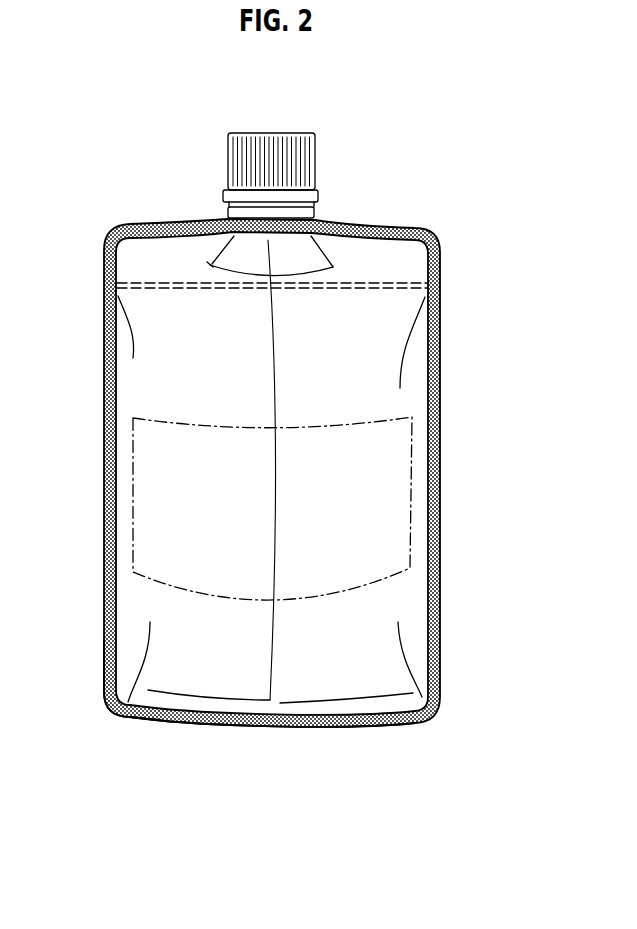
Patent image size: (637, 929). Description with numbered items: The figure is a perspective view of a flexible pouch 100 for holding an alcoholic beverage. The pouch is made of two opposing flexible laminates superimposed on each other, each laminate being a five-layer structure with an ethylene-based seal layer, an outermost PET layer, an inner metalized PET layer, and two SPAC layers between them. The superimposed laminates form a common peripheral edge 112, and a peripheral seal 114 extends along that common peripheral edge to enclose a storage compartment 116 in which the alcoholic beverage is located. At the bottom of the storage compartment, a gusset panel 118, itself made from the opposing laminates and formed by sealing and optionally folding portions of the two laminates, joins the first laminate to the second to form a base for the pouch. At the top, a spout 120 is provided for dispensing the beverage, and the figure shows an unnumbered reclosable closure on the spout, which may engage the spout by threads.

The flexible pouch 100 is at (365, 248).
The common peripheral edge 112 is at (105, 632).
The peripheral seal 114 is at (170, 224).
The storage compartment 116 is at (124, 517).
The gusset panel 118 is at (257, 728).
The spout 120 is at (283, 132).